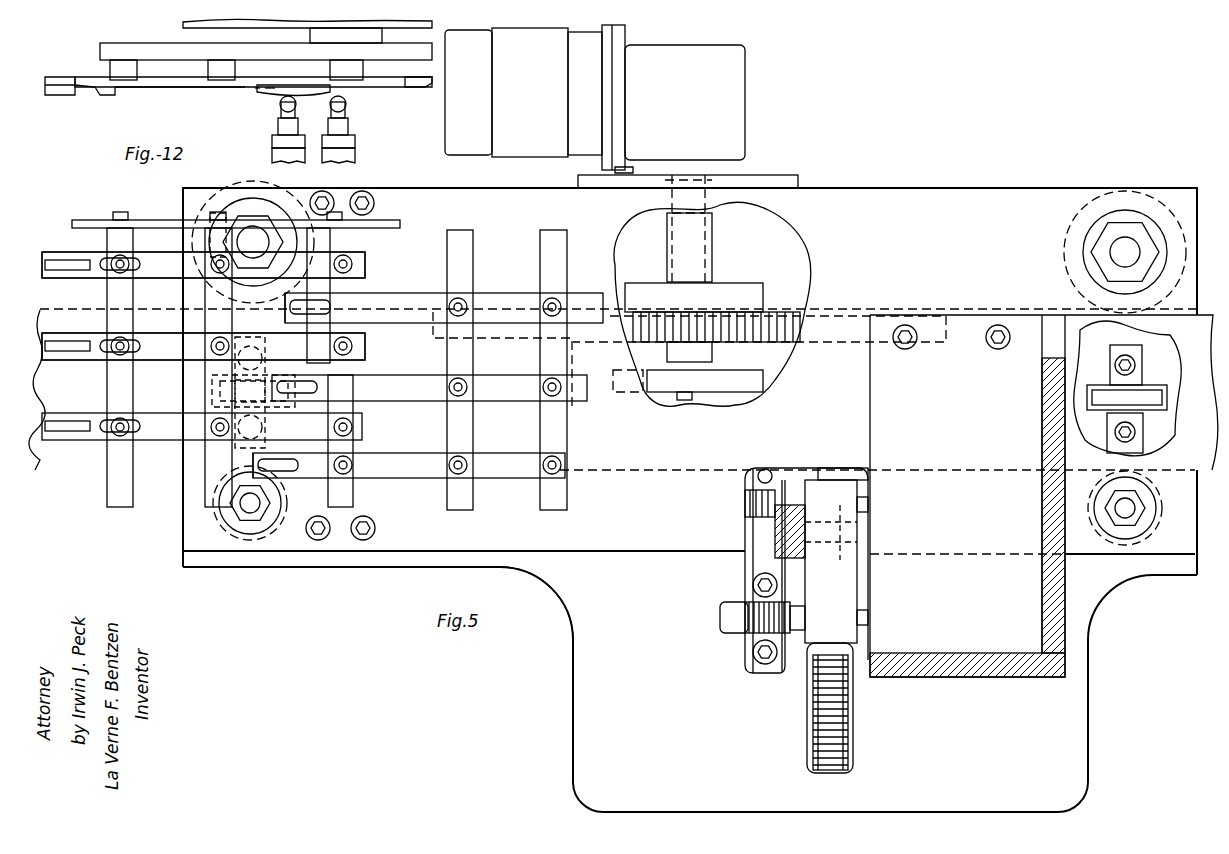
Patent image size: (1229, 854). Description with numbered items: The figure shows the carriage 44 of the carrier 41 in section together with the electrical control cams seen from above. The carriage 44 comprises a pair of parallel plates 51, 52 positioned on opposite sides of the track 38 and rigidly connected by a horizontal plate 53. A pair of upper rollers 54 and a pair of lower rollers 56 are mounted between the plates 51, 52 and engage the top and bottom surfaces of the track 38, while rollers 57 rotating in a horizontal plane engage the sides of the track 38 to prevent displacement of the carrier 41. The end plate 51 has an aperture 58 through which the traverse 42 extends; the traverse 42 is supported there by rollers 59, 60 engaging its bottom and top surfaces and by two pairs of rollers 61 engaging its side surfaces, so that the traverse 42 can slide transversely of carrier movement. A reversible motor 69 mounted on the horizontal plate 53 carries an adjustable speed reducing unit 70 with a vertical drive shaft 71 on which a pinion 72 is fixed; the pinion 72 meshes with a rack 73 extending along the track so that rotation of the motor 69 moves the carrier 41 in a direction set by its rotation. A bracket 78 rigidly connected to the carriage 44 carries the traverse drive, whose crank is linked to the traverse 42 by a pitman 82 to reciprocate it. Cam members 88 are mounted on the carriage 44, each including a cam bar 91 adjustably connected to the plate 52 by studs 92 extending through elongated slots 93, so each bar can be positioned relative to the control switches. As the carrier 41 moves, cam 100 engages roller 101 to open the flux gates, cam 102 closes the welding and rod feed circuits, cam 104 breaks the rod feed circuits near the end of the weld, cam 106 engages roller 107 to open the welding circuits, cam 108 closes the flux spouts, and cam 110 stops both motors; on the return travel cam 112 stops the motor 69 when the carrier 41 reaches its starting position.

In FIG. 5, the track 38 is at (42, 468).
In FIG. 5, the carrier 41 is at (568, 715).
In FIG. 5, the traverse 42 is at (858, 590).
In FIG. 5, the carriage 44 is at (679, 725).
In FIG. 5, the end plate 51 is at (575, 640).
In FIG. 12, the plate 52 is at (183, 23).
In FIG. 5, the plate 52 is at (596, 550).
In FIG. 5, the horizontal plate 53 is at (782, 175).
In FIG. 5, the upper rollers 54 is at (212, 208).
In FIG. 5, the lower rollers 56 is at (225, 527).
In FIG. 5, the rollers 57 is at (212, 383).
In FIG. 5, the aperture 58 is at (812, 655).
In FIG. 5, the roller 59 is at (850, 722).
In FIG. 5, the roller 60 is at (860, 470).
In FIG. 5, the rollers 61 is at (745, 504).
In FIG. 5, the reversible motor 69 is at (462, 152).
In FIG. 5, the adjustable speed reducing unit 70 is at (745, 88).
In FIG. 5, the drive shaft 71 is at (700, 210).
In FIG. 5, the pinion 72 is at (720, 338).
In FIG. 5, the rack 73 is at (775, 316).
In FIG. 5, the bracket 78 is at (1005, 678).
In FIG. 5, the pitman 82 is at (805, 548).
In FIG. 12, the cam members 88 is at (172, 84).
In FIG. 5, the cam members 88 is at (50, 232).
In FIG. 12, the cam bar 91 is at (150, 86).
In FIG. 5, the cam bar 91 is at (80, 280).
In FIG. 5, the studs 92 is at (558, 303).
In FIG. 12, the elongated slots 93 is at (410, 86).
In FIG. 5, the elongated slots 93 is at (498, 303).
In FIG. 12, the cam 100 is at (270, 97).
In FIG. 5, the cam 100 is at (272, 378).
In FIG. 12, the roller 101 is at (280, 113).
In FIG. 12, the cam 102 is at (255, 88).
In FIG. 5, the cam 102 is at (253, 462).
In FIG. 5, the cam 104 is at (70, 420).
In FIG. 12, the cam 106 is at (100, 98).
In FIG. 5, the cam 106 is at (108, 212).
In FIG. 12, the roller 107 is at (346, 108).
In FIG. 5, the cam 108 is at (62, 360).
In FIG. 12, the cam 110 is at (55, 95).
In FIG. 5, the cam 110 is at (78, 262).
In FIG. 12, the cam 112 is at (310, 87).
In FIG. 5, the cam 112 is at (285, 308).